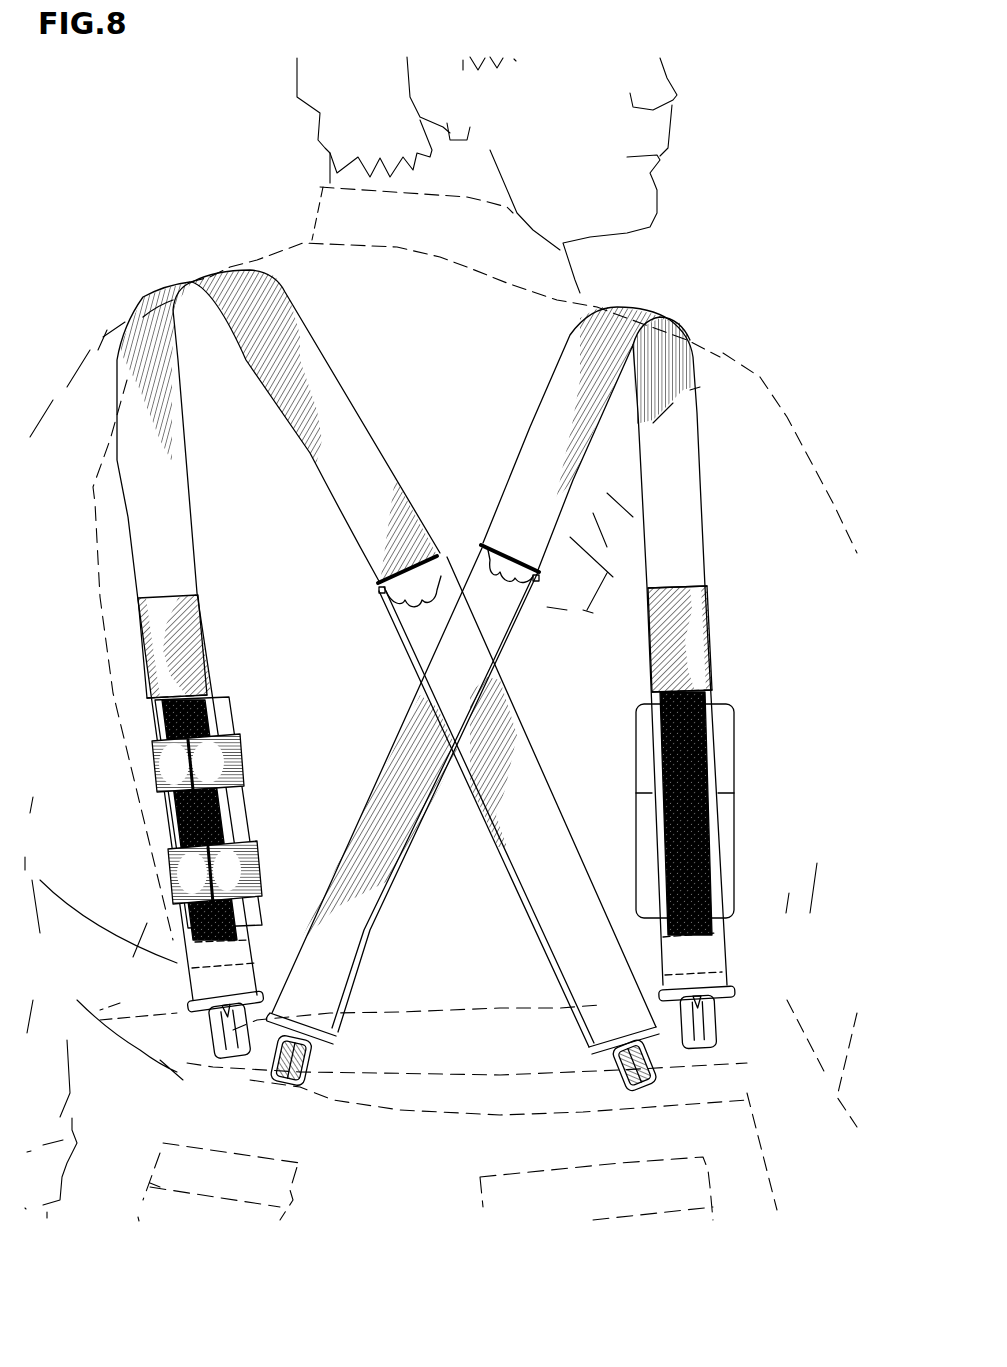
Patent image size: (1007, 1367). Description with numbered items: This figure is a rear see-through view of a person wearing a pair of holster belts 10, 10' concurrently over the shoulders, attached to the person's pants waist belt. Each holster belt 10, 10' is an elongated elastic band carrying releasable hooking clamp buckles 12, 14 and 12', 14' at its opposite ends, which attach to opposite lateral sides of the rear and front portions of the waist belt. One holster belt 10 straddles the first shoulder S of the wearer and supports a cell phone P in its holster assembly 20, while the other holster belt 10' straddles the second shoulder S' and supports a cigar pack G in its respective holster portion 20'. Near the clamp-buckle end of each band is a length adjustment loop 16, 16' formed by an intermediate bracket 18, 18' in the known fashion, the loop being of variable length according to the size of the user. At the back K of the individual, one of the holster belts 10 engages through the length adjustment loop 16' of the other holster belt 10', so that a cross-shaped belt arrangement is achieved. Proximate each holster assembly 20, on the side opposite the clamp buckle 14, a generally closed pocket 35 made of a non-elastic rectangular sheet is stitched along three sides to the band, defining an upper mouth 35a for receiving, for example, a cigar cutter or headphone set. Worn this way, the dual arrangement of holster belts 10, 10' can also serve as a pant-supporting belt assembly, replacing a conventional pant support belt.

The holster belt 10 is at (220, 635).
The holster belt 10' is at (653, 646).
The hooking clamp buckle 12 is at (655, 1093).
The hooking clamp buckle 12' is at (334, 1090).
The hooking clamp buckle 14 is at (190, 1049).
The hooking clamp buckle 14' is at (744, 1039).
The length adjustment loop 16 is at (519, 805).
The length adjustment loop 16' is at (402, 796).
The intermediate bracket 18 is at (425, 517).
The intermediate bracket 18' is at (537, 596).
The holster assembly 20 is at (160, 832).
The holster portion 20' is at (771, 833).
The pocket 35 is at (157, 633).
The upper mouth 35a is at (655, 588).
The first shoulder S is at (250, 200).
The second shoulder S' is at (783, 327).
The back K is at (292, 629).
The cell phone P is at (238, 815).
The cigar pack G is at (727, 808).